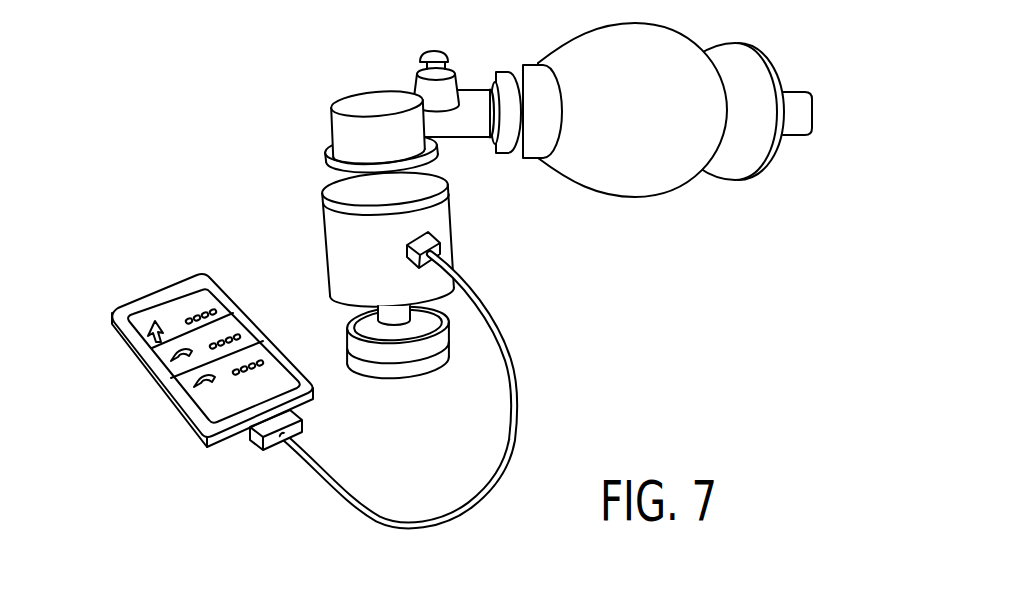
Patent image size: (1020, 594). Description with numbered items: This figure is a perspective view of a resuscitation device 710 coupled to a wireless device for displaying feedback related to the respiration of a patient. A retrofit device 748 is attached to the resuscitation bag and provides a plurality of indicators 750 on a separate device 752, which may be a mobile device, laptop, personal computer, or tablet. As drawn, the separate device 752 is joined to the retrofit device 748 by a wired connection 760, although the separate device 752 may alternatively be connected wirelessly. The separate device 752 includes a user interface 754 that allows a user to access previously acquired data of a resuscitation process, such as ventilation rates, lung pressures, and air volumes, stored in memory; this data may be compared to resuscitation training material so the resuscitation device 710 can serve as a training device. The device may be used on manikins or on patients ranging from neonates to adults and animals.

The resuscitation device 710 is at (216, 68).
The retrofit device 748 is at (325, 232).
The plurality of indicators 750 is at (253, 357).
The separate device 752 is at (160, 294).
The user interface 754 is at (165, 376).
The wired connection 760 is at (513, 383).